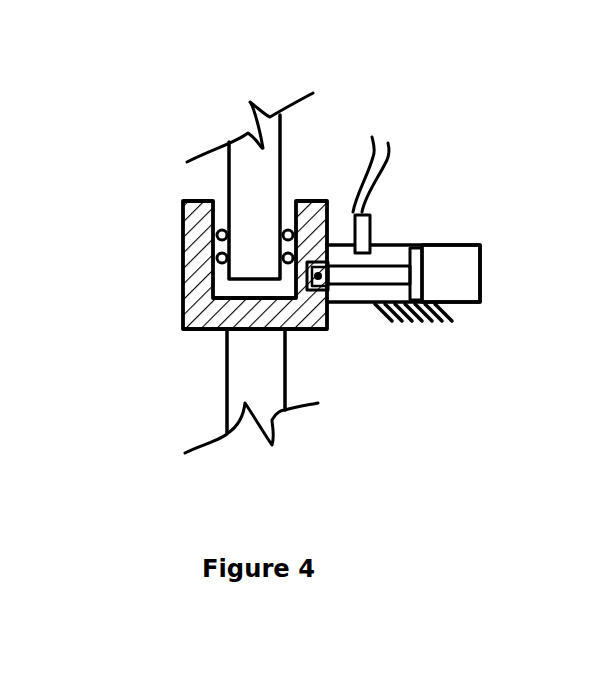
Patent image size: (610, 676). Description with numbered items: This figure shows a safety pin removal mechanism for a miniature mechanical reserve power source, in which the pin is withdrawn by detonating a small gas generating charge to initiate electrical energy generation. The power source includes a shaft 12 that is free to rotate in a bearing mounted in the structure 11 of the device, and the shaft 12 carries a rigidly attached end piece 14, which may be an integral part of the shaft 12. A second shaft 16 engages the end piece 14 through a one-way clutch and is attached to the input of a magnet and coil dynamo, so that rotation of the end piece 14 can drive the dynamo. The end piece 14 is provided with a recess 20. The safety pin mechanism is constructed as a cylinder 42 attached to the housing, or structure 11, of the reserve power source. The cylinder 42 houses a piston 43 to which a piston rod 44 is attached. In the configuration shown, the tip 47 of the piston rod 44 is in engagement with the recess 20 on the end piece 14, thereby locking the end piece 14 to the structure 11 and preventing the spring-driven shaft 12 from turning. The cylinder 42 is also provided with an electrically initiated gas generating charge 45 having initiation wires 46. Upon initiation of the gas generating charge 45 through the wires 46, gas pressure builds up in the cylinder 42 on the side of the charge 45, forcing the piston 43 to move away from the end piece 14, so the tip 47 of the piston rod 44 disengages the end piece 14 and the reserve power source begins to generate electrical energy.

The structure 11 is at (428, 323).
The shaft 12 is at (246, 368).
The end piece 14 is at (192, 273).
The shaft 16 is at (253, 218).
The recess 20 is at (313, 300).
The cylinder 42 is at (460, 245).
The piston 43 is at (422, 272).
The piston rod 44 is at (377, 276).
The gas generating charge 45 is at (372, 228).
The initiation wires 46 is at (380, 140).
The tip 47 is at (322, 262).